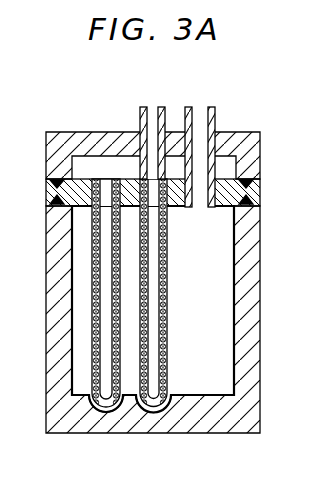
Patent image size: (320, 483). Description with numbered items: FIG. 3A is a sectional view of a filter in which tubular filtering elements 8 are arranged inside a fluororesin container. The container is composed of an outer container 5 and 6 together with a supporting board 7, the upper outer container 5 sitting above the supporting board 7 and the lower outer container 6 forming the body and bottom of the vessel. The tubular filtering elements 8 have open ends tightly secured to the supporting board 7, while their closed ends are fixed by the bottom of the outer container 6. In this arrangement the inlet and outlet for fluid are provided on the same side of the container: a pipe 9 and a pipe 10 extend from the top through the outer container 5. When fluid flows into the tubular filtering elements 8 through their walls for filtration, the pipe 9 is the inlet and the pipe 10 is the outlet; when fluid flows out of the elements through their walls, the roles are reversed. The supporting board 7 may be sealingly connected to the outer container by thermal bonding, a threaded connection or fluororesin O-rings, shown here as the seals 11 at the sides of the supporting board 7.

The outer container 5 is at (253, 165).
The outer container 6 is at (243, 310).
The supporting board 7 is at (260, 195).
The tubular filtering elements 8 is at (166, 257).
The pipe 9 is at (201, 112).
The pipe 10 is at (152, 110).
The O-ring seals 11 is at (52, 200).